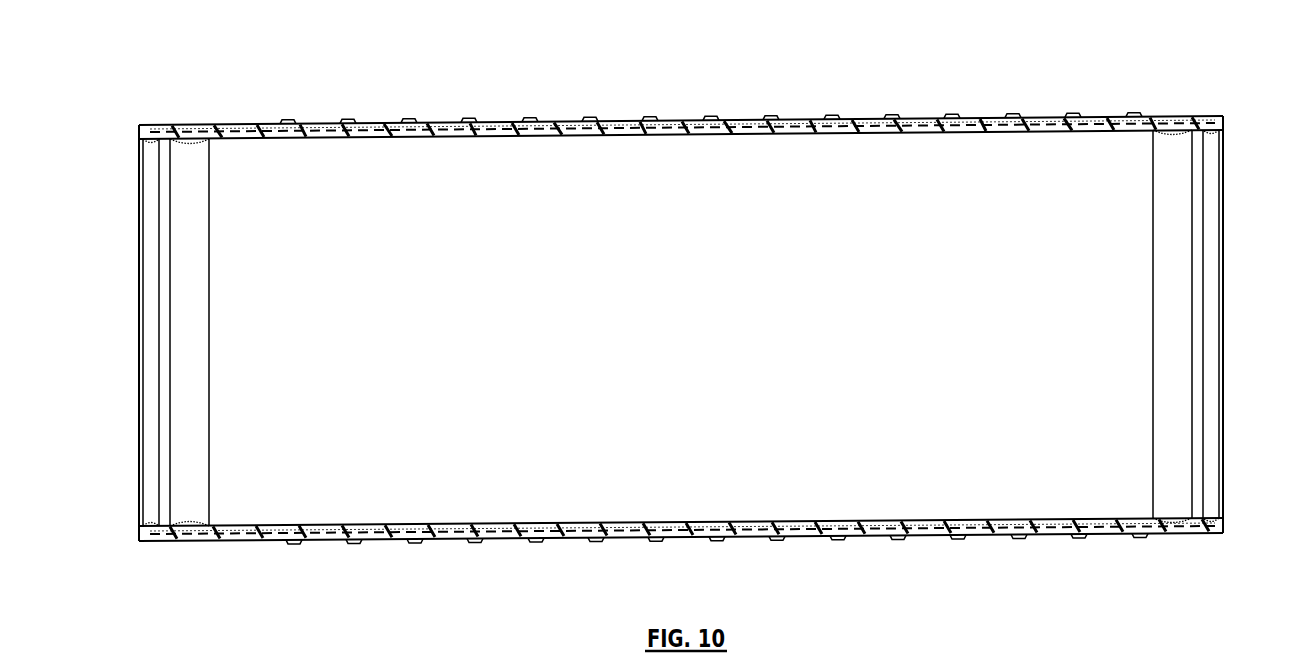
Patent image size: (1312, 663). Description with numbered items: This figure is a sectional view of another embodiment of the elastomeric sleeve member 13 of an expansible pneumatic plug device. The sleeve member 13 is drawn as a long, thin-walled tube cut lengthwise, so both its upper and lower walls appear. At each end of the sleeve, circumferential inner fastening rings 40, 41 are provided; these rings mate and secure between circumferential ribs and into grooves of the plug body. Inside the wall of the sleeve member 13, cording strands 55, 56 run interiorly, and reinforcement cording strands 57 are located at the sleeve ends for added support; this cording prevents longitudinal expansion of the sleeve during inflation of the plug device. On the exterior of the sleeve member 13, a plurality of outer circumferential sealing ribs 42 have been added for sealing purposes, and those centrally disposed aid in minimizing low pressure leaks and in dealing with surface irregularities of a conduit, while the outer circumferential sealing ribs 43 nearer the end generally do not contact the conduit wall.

The elastomeric sleeve member 13 is at (611, 122).
The circumferential inner fastening ring 40 is at (148, 145).
The circumferential inner fastening ring 41 is at (188, 145).
The outer circumferential sealing rib 42 is at (710, 114).
The outer circumferential sealing rib 43 is at (289, 121).
The cording strand 55 is at (432, 524).
The cording strand 56 is at (448, 540).
The reinforcement cording strand 57 is at (187, 532).